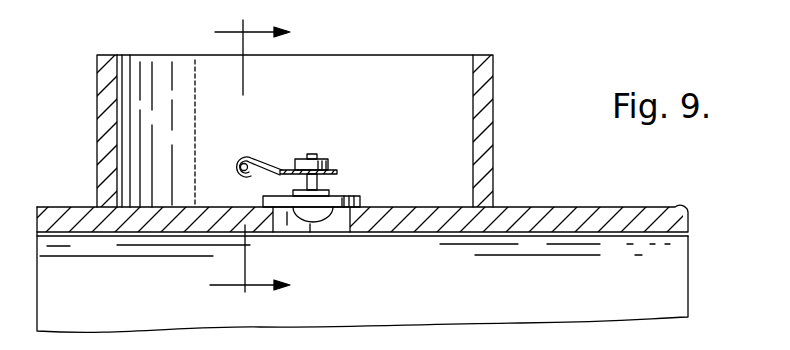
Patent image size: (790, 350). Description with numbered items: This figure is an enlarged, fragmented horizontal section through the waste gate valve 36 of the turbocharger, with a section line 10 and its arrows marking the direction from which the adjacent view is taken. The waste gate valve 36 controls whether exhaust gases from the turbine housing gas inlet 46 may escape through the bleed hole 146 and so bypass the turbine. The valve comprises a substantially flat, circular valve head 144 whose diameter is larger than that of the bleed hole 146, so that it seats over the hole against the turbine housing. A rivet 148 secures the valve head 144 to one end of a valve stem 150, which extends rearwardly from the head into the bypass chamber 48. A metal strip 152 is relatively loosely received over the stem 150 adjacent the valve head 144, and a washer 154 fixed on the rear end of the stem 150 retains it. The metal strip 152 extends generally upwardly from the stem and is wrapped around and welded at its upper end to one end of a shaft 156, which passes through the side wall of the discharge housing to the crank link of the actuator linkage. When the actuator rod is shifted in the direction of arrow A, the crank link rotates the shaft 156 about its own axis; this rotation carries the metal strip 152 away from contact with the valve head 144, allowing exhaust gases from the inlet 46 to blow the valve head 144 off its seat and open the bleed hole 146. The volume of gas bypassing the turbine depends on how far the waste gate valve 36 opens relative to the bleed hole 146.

The section line / viewing direction 10 is at (232, 160).
The waste gate valve 36 is at (343, 98).
The turbine housing gas inlet 46 is at (121, 289).
The bypass chamber 48 is at (226, 88).
The valve head 144 is at (361, 203).
The bleed hole 146 is at (332, 223).
The rivet 148 is at (318, 156).
The valve stem 150 is at (320, 184).
The metal strip 152 is at (266, 158).
The washer 154 is at (329, 168).
The shaft 156 is at (242, 170).